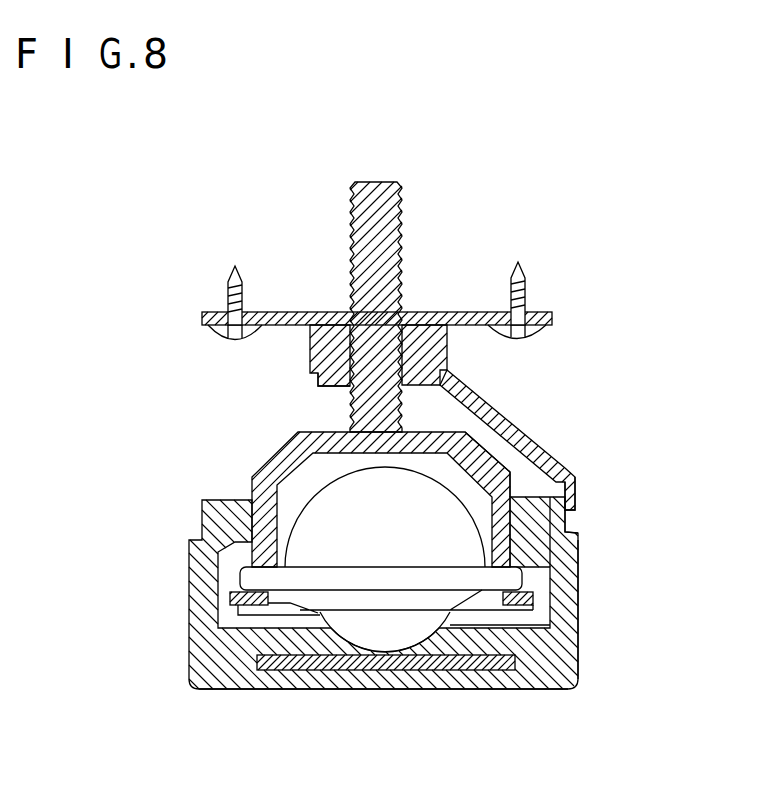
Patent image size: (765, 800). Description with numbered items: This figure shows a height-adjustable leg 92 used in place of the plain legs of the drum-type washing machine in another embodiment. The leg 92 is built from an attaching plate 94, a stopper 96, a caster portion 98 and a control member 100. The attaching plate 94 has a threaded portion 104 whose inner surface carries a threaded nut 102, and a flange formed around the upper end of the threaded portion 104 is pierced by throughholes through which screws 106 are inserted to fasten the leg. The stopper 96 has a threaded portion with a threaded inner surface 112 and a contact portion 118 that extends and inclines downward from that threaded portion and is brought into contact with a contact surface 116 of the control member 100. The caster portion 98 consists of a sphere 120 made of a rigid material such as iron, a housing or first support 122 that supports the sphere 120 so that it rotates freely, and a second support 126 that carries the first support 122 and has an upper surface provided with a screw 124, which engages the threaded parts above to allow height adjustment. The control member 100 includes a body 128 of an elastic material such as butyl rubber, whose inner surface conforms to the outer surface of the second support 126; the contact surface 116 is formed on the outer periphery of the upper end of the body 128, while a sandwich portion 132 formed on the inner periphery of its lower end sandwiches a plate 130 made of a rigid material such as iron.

The leg 92 is at (197, 201).
The attaching plate 94 is at (567, 320).
The stopper 96 is at (523, 400).
The caster portion 98 is at (500, 462).
The control member 100 is at (605, 630).
The threaded nut 102 is at (412, 322).
The threaded portion 104 is at (327, 342).
The screws 106 is at (528, 276).
The threaded inner surface 112 is at (340, 386).
The contact surface 116 is at (578, 520).
The contact portion 118 is at (578, 500).
The sphere 120 is at (377, 633).
The first support 122 is at (322, 512).
The screw 124 is at (404, 192).
The second support 126 is at (278, 462).
The body 128 is at (570, 657).
The plate 130 is at (410, 663).
The sandwich portion 132 is at (503, 677).